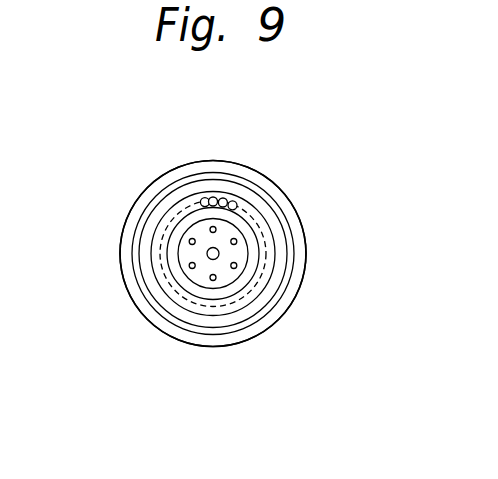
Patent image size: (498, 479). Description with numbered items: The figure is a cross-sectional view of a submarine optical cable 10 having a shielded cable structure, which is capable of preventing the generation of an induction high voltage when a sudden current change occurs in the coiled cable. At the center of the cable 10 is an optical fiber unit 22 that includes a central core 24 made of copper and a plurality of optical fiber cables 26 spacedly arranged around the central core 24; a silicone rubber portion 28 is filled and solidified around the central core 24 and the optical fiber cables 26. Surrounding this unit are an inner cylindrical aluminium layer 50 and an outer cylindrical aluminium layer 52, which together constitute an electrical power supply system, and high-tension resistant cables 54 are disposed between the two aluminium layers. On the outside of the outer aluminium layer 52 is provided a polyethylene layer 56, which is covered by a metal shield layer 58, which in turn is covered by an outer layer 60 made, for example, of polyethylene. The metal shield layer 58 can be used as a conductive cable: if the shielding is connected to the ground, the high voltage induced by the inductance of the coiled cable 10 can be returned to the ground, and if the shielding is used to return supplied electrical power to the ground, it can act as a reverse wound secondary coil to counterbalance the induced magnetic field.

The submarine optical cable 10 is at (253, 157).
The optical fiber unit 22 is at (227, 232).
The central core 24 is at (219, 254).
The optical fiber cables 26 is at (237, 269).
The silicone rubber portion 28 is at (228, 278).
The inner cylindrical aluminium layer 50 is at (175, 237).
The outer cylindrical aluminium layer 52 is at (178, 199).
The high-tension resistant cables 54 is at (215, 198).
The polyethylene layer 56 is at (142, 258).
The metal shield layer 58 is at (142, 290).
The outer layer 60 is at (163, 325).